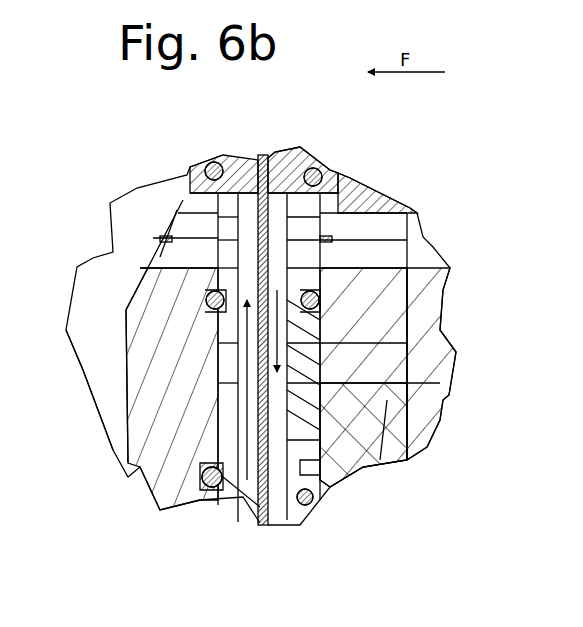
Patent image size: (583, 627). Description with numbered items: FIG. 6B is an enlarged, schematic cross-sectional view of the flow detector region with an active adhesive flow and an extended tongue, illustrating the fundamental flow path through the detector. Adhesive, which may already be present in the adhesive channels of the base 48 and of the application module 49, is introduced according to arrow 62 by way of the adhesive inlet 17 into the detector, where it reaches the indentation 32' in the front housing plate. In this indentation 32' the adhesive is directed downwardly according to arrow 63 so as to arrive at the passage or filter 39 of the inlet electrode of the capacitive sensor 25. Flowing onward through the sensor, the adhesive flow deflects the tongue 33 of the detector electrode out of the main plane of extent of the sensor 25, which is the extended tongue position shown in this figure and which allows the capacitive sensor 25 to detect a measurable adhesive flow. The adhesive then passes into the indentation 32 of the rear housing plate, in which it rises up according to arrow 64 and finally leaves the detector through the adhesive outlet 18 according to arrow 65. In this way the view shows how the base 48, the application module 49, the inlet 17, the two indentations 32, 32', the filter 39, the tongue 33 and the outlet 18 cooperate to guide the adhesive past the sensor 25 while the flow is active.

The adhesive inlet 17 is at (290, 150).
The adhesive outlet 18 is at (222, 147).
The capacitive sensor 25 is at (262, 535).
The indentation of the rear housing plate 32 is at (150, 420).
The indentation of the front housing plate 32' is at (354, 426).
The tongue 33 is at (213, 500).
The passage or filter 39 is at (293, 513).
The base 48 is at (436, 247).
The application module 49 is at (148, 333).
The arrow 62 is at (348, 238).
The arrow 63 is at (393, 427).
The arrow 64 is at (163, 380).
The arrow 65 is at (200, 196).